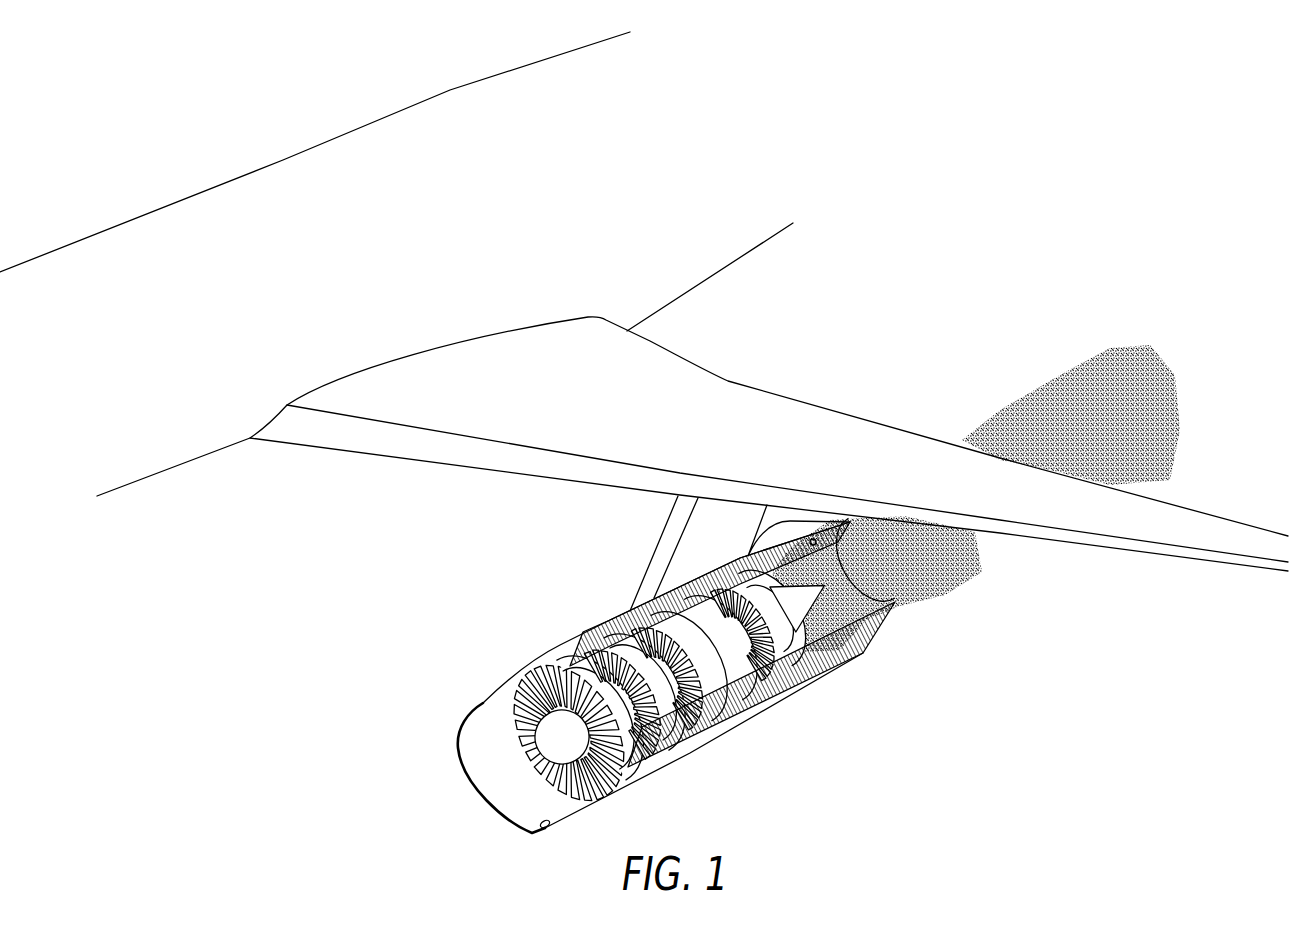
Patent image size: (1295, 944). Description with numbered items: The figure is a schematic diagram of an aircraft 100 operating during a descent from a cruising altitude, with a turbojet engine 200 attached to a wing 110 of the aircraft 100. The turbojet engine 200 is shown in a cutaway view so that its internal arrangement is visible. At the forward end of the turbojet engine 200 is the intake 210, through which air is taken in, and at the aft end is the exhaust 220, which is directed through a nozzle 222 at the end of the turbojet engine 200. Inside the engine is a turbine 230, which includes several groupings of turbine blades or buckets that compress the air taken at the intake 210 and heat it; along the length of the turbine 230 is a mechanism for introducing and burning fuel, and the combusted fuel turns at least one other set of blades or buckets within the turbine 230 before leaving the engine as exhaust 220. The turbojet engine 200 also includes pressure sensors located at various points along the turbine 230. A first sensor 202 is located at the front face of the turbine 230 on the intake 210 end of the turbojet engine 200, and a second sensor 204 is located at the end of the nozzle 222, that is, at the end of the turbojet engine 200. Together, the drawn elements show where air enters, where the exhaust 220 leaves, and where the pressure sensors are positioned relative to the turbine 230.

The aircraft 100 is at (283, 178).
The wing 110 is at (798, 412).
The turbojet engine 200 is at (682, 662).
The first sensor 202 is at (537, 830).
The second sensor 204 is at (830, 517).
The intake 210 is at (492, 798).
The exhaust 220 is at (927, 568).
The nozzle 222 is at (853, 655).
The turbine 230 is at (518, 692).